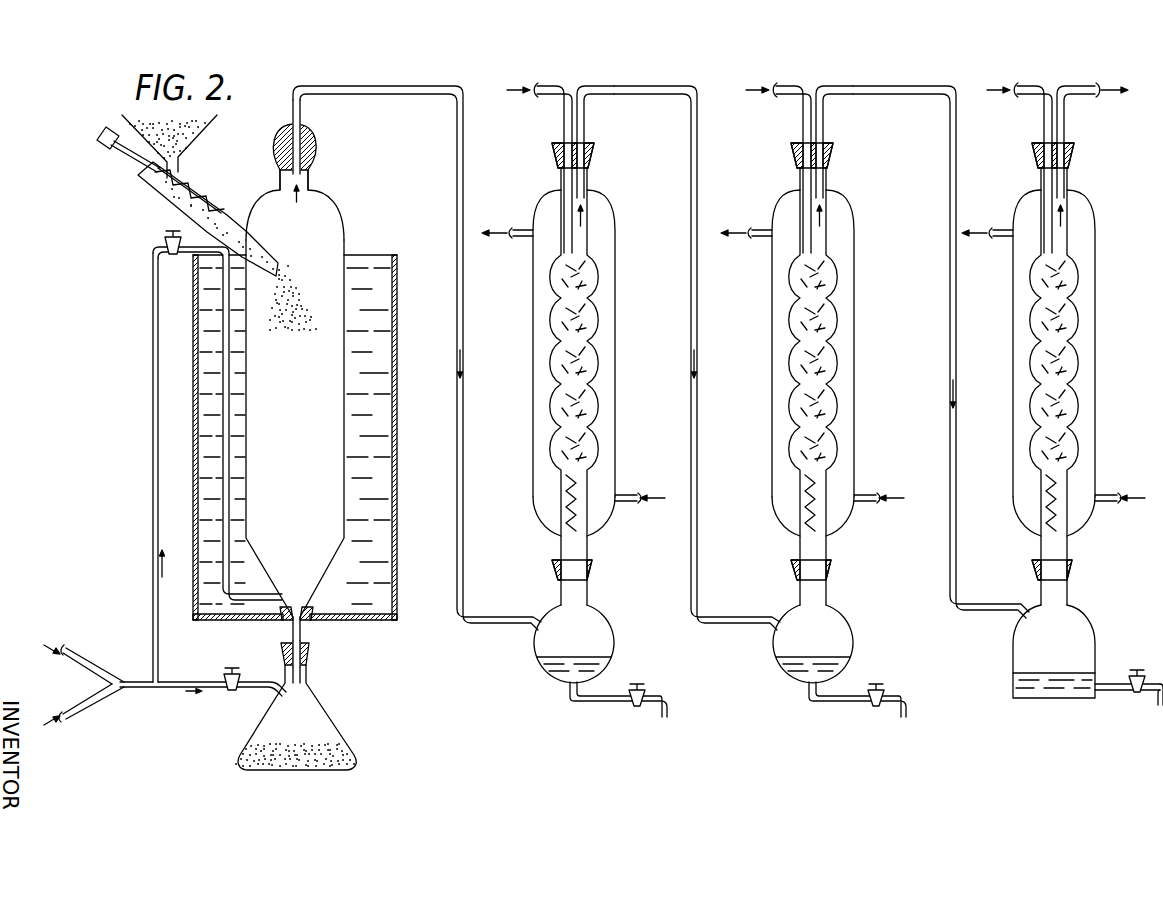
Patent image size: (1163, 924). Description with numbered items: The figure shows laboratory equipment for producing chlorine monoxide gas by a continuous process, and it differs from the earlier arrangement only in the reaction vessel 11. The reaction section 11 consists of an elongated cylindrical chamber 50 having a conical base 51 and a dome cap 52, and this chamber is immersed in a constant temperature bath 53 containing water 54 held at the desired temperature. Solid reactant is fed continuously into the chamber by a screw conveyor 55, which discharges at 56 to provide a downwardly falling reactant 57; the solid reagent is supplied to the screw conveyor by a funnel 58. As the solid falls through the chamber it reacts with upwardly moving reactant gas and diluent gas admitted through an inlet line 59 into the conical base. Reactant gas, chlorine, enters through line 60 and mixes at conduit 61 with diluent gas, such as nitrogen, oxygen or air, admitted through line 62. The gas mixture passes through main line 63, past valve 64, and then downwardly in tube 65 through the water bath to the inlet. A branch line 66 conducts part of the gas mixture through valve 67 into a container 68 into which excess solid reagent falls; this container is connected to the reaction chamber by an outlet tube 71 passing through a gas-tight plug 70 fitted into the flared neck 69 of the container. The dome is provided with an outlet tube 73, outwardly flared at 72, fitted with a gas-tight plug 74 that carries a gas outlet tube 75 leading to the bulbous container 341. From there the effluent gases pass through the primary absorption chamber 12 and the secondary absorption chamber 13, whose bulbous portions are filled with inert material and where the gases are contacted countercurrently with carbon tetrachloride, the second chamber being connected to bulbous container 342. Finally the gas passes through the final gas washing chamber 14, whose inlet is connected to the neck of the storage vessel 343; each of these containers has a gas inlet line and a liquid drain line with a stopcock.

The reaction vessel 11 is at (349, 243).
The primary absorption chamber 12 is at (573, 344).
The secondary absorption chamber 13 is at (812, 344).
The final gas washing chamber 14 is at (1053, 344).
The elongated cylindrical chamber 50 is at (346, 328).
The conical base 51 is at (320, 587).
The dome cap 52 is at (342, 216).
The constant temperature bath 53 is at (193, 428).
The water 54 is at (386, 432).
The screw conveyor 55 is at (160, 196).
The discharge point of screw conveyor 56 is at (276, 257).
The downwardly falling reactant 57 is at (294, 283).
The funnel 58 is at (187, 148).
The inlet line 59 is at (247, 603).
The reactant gas line 60 is at (102, 670).
The conduit 61 is at (143, 687).
The diluent gas line 62 is at (108, 696).
The main line 63 is at (152, 603).
The valve 64 is at (166, 238).
The tube 65 is at (222, 327).
The branch line 66 is at (190, 687).
The valve 67 is at (233, 690).
The container 68 is at (308, 705).
The flared neck 69 is at (286, 658).
The gas-tight plug 70 is at (306, 645).
The outlet tube 71 is at (304, 633).
The outwardly flared portion 72 is at (308, 158).
The outlet tube 73 is at (310, 186).
The gas-tight plug 74 is at (312, 138).
The gas outlet tube 75 is at (300, 103).
The bulbous container 341 is at (607, 661).
The bulbous container 342 is at (846, 661).
The storage vessel 343 is at (1088, 655).